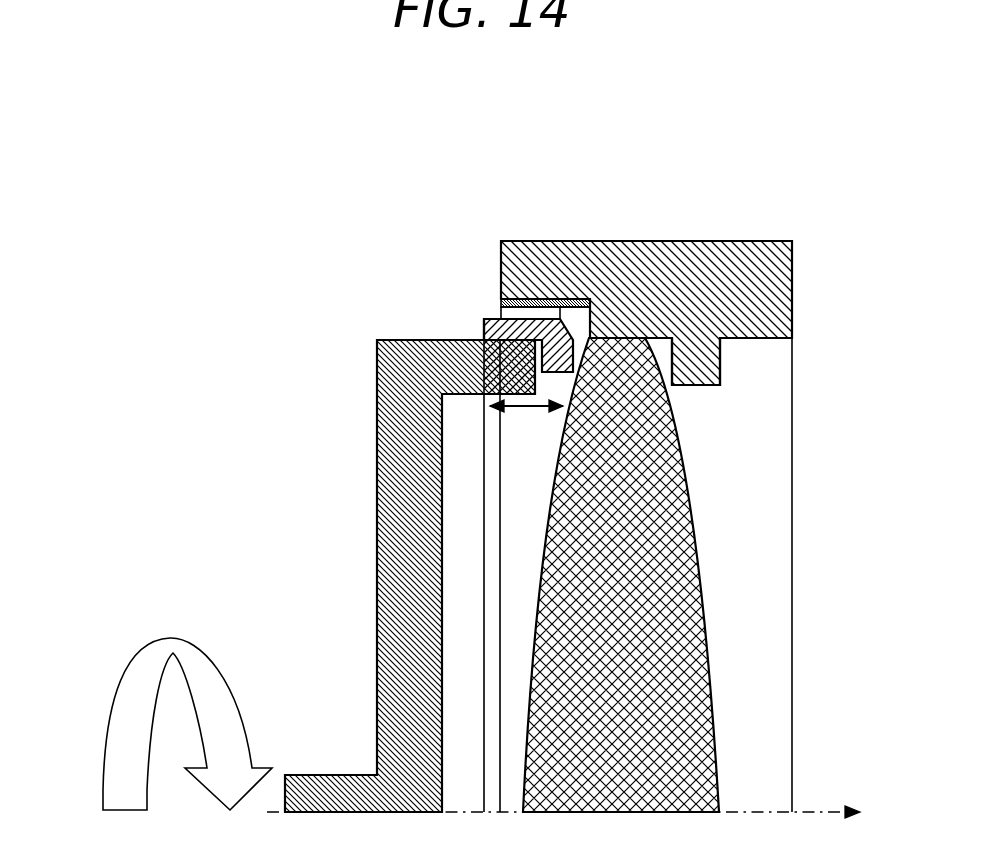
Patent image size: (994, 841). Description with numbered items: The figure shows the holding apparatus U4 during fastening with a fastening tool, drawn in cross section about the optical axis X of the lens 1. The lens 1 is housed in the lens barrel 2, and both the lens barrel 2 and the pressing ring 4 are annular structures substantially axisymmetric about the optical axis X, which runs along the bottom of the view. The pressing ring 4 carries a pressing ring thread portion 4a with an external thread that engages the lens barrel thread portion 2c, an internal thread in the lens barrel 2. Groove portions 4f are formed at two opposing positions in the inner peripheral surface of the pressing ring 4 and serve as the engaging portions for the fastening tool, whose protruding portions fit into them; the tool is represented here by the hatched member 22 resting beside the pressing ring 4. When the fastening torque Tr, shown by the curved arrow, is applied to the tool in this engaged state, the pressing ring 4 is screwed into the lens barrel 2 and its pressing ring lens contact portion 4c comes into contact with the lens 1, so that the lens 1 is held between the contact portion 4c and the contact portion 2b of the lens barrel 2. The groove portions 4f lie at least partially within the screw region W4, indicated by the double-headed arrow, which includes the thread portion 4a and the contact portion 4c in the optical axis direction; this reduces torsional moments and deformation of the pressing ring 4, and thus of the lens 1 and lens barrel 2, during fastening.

The lens 1 is at (673, 573).
The lens barrel 2 is at (770, 272).
The contact portion of the lens barrel 2b is at (678, 391).
The lens barrel thread portion 2c is at (500, 300).
The pressing ring 4 is at (519, 326).
The pressing ring thread portion 4a is at (512, 314).
The pressing ring lens contact portion 4c is at (573, 373).
The groove portions 4f is at (484, 336).
The housing 22 is at (385, 592).
The screw region W4 is at (533, 408).
The holding apparatus U4 is at (556, 178).
The fastening torque Tr is at (132, 657).
The optical axis X is at (830, 810).